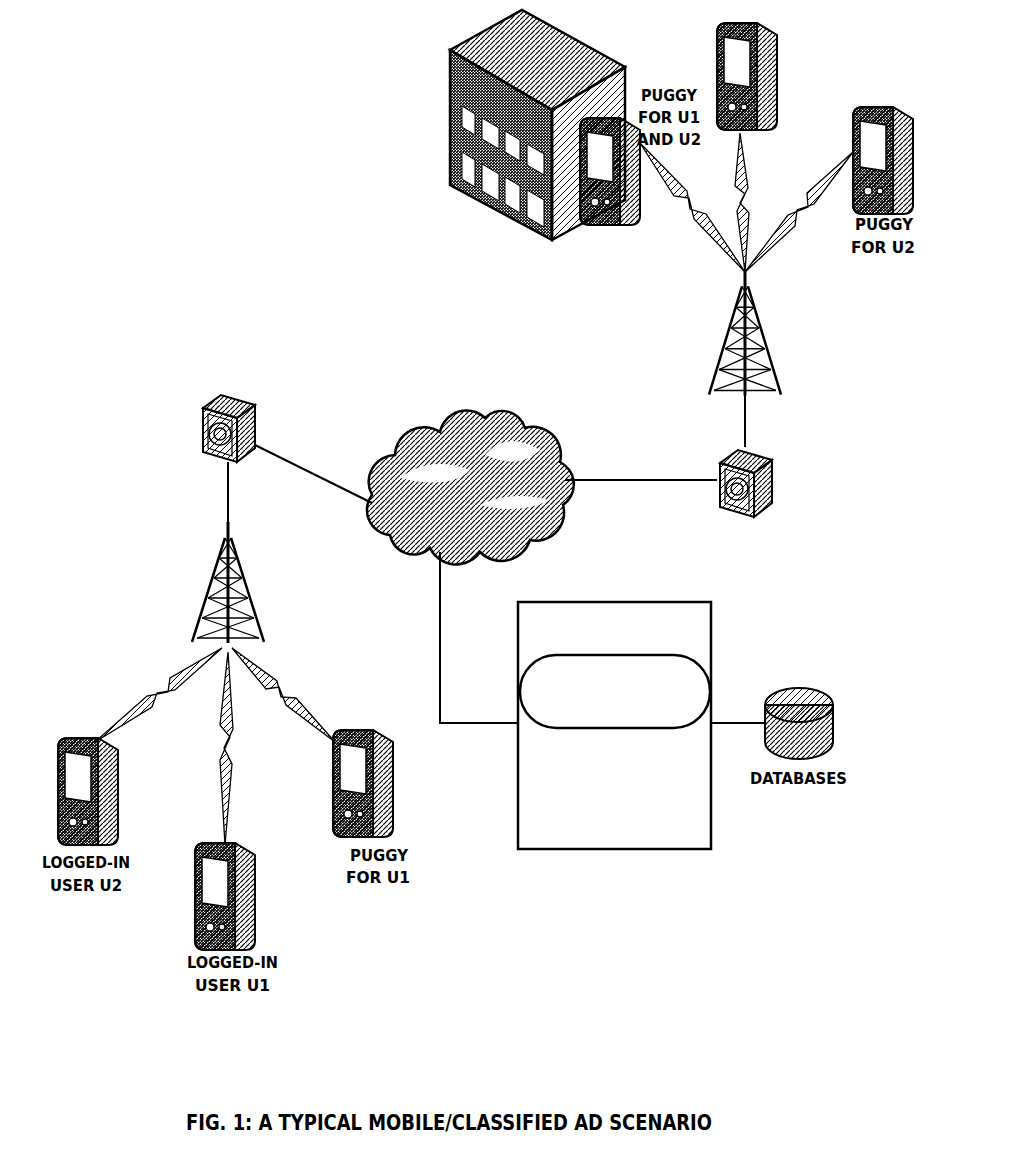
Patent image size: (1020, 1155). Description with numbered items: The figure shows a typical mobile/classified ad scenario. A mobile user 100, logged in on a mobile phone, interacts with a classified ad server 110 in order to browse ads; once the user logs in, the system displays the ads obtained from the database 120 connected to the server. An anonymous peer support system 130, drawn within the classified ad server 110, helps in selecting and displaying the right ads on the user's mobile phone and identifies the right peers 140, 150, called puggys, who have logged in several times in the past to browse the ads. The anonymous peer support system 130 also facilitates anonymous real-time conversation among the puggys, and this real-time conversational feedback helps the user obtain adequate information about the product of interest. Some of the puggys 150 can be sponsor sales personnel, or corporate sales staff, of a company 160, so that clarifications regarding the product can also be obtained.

The mobile user 100 is at (195, 913).
The classified ad server 110 is at (518, 792).
The database 120 is at (834, 712).
The anonymous peer support system 130 is at (711, 671).
The peer (puggy) 140 is at (333, 778).
The peer (puggy) 150 is at (612, 225).
The company 160 is at (552, 242).